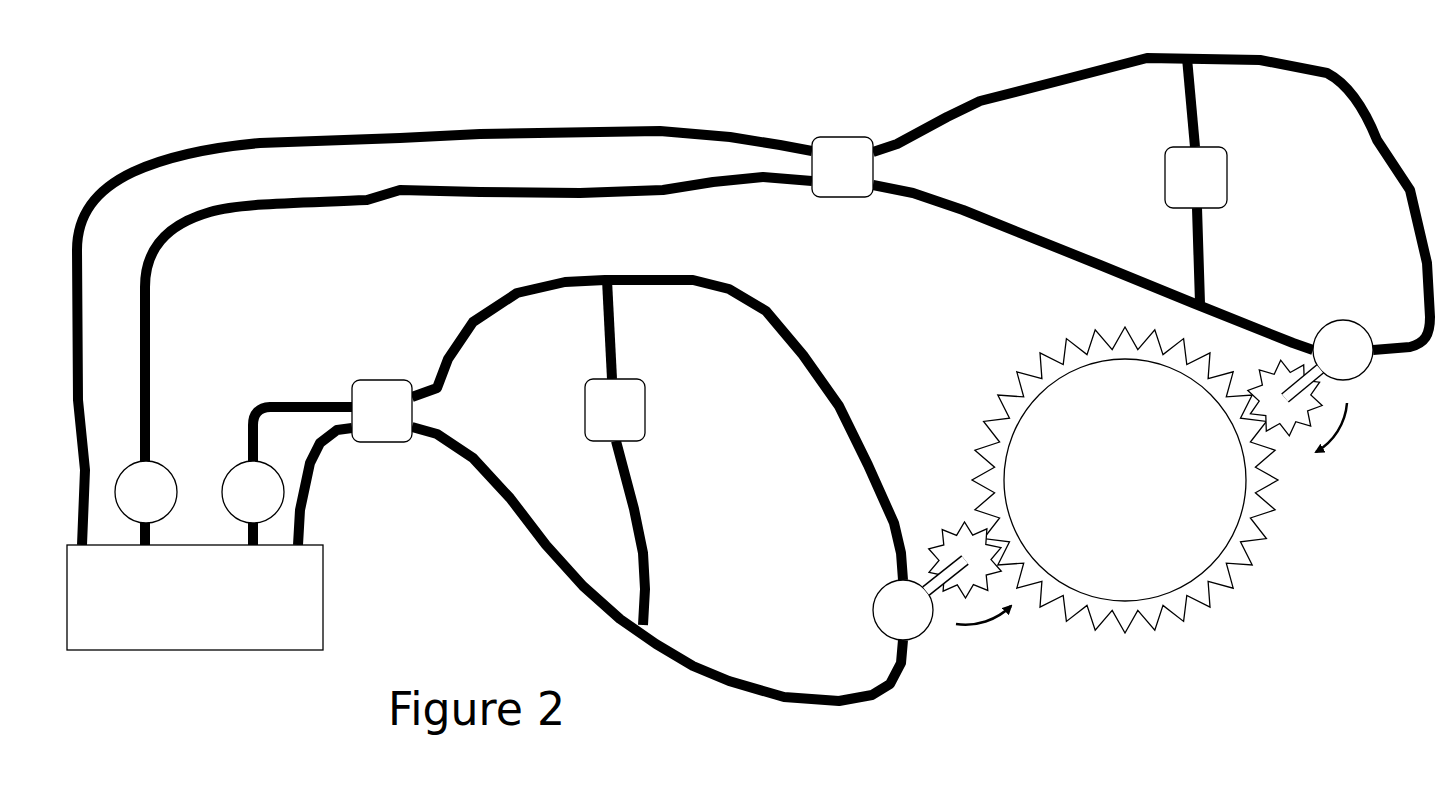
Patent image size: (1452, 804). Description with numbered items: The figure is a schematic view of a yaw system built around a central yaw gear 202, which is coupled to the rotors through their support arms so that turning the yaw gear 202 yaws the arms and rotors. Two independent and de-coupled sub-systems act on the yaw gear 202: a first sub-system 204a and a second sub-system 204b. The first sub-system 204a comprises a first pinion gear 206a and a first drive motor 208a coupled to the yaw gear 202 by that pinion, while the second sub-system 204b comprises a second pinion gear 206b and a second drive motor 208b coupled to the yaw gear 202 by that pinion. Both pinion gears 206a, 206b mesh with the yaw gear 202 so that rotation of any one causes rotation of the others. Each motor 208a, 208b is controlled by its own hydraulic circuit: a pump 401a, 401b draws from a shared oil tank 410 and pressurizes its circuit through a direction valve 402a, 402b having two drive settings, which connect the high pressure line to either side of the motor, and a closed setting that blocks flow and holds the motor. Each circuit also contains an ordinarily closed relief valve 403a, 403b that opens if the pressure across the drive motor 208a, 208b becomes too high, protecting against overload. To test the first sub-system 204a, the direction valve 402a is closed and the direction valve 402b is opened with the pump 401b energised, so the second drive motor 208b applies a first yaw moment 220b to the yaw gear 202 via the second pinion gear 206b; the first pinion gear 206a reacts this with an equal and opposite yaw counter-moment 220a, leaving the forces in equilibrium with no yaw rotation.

The yaw gear 202 is at (1152, 613).
The first sub-system 204a is at (937, 702).
The second sub-system 204b is at (963, 252).
The first pinion gear 206a is at (958, 543).
The second pinion gear 206b is at (1292, 422).
The first drive motor 208a is at (903, 610).
The second drive motor 208b is at (1343, 350).
The yaw counter-moment 220a is at (980, 625).
The first yaw moment 220b is at (1338, 437).
The pump 401a is at (253, 492).
The pump 401b is at (146, 492).
The direction valve 402a is at (382, 411).
The direction valve 402b is at (842, 167).
The relief valve 403a is at (615, 452).
The relief valve 403b is at (1196, 180).
The oil tank 410 is at (195, 597).